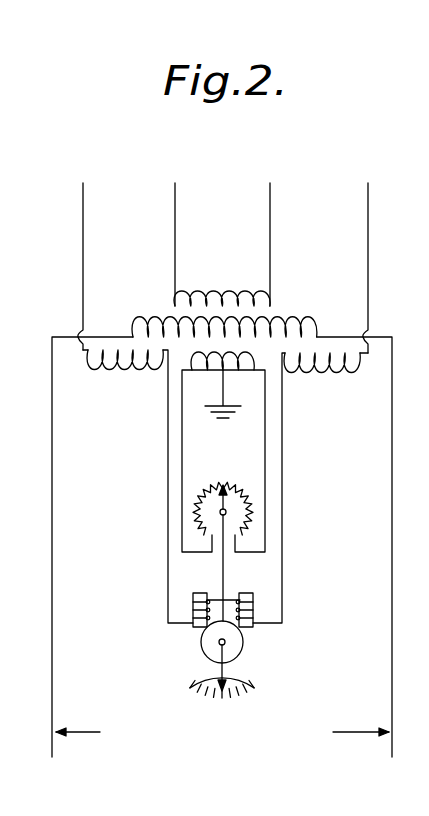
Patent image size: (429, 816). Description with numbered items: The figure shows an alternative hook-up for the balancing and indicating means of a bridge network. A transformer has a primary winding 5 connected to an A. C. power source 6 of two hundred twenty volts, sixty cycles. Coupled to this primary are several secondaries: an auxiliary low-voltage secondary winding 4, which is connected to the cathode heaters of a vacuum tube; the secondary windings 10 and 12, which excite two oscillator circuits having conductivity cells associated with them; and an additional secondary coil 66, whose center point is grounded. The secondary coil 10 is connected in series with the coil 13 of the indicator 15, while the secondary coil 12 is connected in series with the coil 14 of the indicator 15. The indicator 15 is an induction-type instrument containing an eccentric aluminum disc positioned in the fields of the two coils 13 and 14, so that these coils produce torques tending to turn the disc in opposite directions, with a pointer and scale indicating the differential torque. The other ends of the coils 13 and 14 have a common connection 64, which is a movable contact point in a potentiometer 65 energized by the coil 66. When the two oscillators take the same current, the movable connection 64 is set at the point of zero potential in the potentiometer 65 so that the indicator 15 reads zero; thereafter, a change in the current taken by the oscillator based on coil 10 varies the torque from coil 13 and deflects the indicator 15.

The auxiliary low-voltage secondary winding 4 is at (219, 289).
The primary winding 5 is at (141, 320).
The A. C. power source 6 is at (302, 718).
The secondary winding 10 is at (318, 373).
The secondary winding 12 is at (128, 364).
The coil 13 is at (256, 611).
The coil 14 is at (192, 610).
The indicator 15 is at (215, 671).
The movable contact point 64 is at (226, 570).
The potentiometer 65 is at (236, 487).
The secondary coil 66 is at (206, 372).